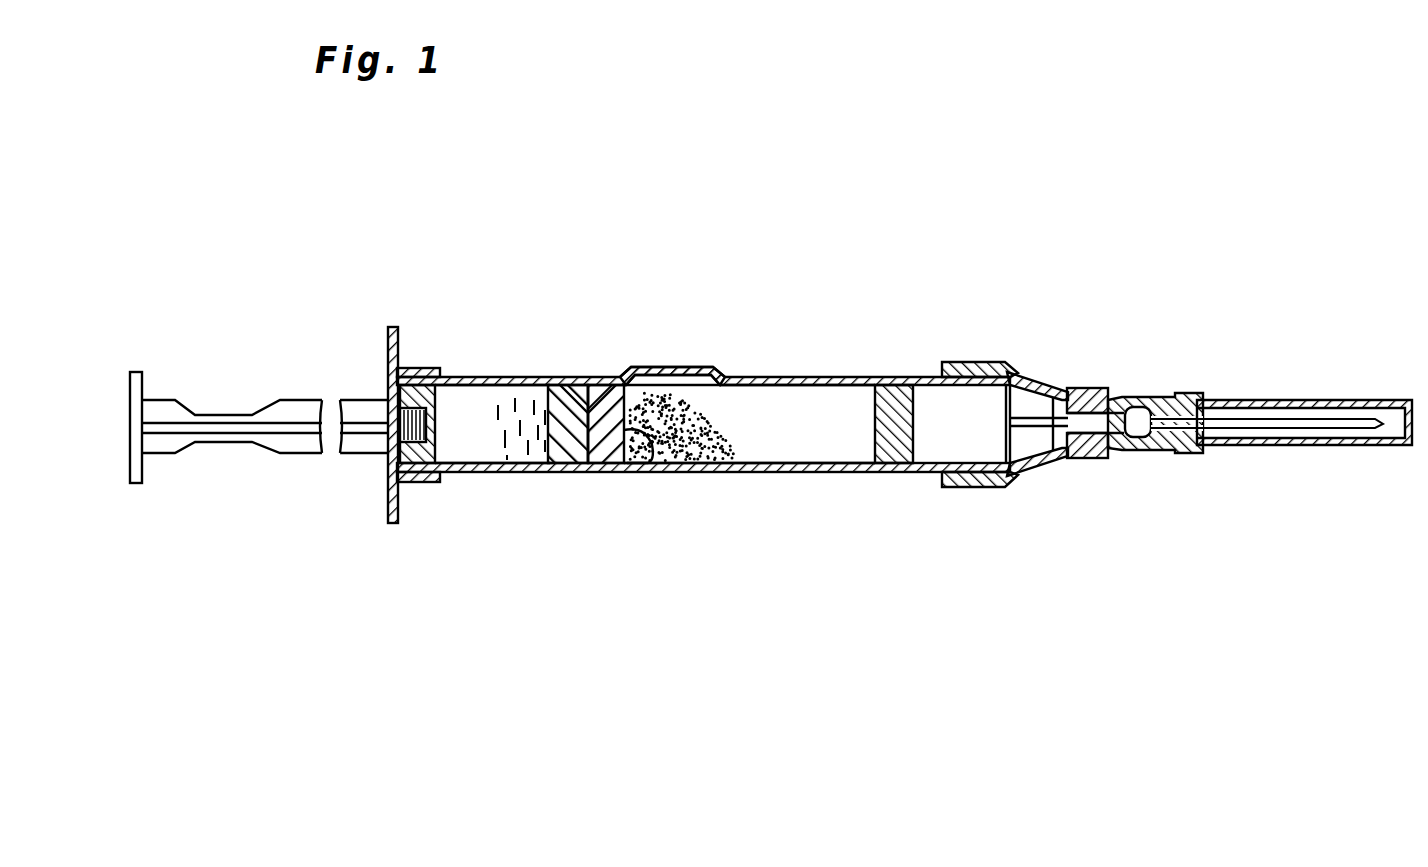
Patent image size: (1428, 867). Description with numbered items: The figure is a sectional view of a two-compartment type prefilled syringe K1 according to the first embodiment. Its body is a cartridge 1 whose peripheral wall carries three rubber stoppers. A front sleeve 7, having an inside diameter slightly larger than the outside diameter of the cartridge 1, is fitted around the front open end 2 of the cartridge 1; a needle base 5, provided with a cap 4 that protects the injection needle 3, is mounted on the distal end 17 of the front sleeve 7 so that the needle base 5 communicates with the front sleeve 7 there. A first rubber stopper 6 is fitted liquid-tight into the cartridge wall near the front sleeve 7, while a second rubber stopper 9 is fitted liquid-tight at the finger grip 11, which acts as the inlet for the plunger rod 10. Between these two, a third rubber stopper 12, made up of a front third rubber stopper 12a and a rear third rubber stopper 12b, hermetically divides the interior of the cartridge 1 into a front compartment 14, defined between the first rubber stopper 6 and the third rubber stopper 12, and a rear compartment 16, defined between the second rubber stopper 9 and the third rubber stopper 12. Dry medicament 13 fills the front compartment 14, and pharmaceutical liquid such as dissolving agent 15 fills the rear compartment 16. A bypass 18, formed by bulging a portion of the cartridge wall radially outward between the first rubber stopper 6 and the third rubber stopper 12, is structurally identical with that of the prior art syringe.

The two-compartment type prefilled syringe K1 is at (825, 233).
The cartridge 1 is at (735, 378).
The front open end 2 is at (1030, 457).
The injection needle 3 is at (1302, 418).
The cap 4 is at (1334, 447).
The needle base 5 is at (1120, 385).
The first rubber stopper 6 is at (892, 385).
The front sleeve 7 is at (1000, 362).
The second rubber stopper 9 is at (420, 482).
The plunger rod 10 is at (289, 410).
The finger grip 11 is at (386, 493).
The third rubber stopper 12 is at (573, 374).
The front third rubber stopper 12a is at (652, 466).
The rear third rubber stopper 12b is at (566, 462).
The dry medicament 13 is at (800, 440).
The front compartment 14 is at (703, 462).
The dissolving agent 15 is at (476, 385).
The rear compartment 16 is at (503, 455).
The distal end 17 is at (1140, 398).
The bypass 18 is at (685, 368).